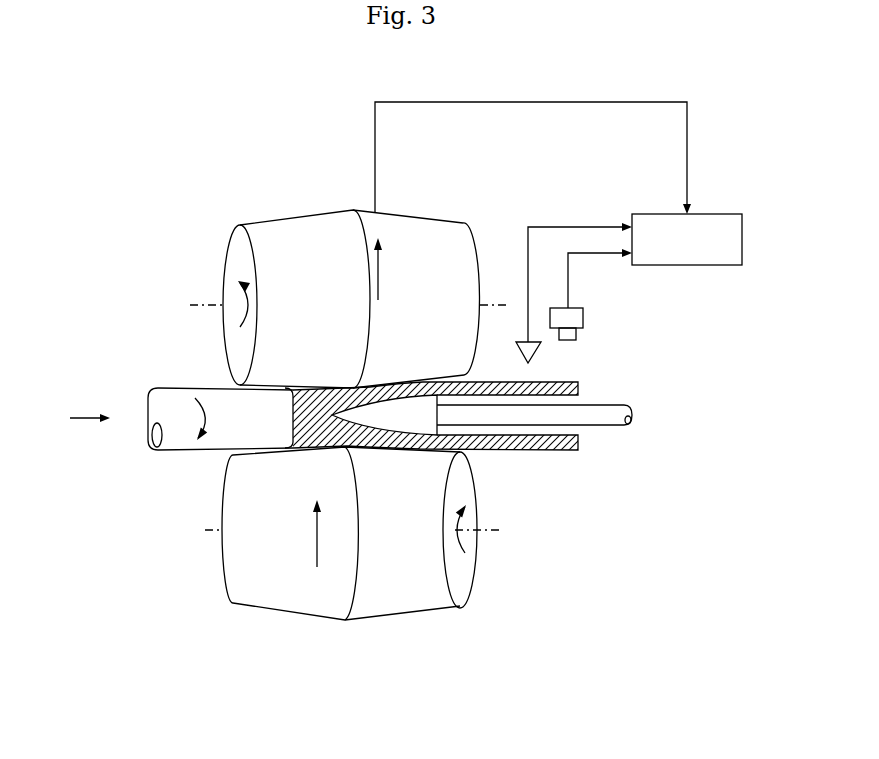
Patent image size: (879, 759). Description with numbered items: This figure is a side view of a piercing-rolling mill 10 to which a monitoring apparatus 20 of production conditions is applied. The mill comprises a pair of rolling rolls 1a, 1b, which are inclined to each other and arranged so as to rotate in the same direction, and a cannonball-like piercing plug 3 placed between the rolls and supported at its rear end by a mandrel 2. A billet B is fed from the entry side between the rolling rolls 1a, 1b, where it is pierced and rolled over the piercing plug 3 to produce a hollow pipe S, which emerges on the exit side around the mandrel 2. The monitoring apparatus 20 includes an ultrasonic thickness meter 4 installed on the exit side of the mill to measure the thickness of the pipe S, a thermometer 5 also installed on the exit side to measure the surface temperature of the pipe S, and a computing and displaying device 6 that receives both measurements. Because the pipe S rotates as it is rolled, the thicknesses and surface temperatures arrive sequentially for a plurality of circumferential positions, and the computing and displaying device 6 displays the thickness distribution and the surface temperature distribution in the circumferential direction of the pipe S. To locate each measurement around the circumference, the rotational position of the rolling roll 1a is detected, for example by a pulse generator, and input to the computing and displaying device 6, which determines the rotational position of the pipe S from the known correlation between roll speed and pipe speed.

The piercing-rolling mill 10 is at (162, 262).
The rolling roll 1a is at (417, 237).
The rolling roll 1b is at (413, 598).
The billet B is at (188, 428).
The pipe S is at (507, 450).
The piercing plug 3 is at (407, 410).
The mandrel 2 is at (603, 417).
The monitoring apparatus of production conditions 20 is at (572, 212).
The computing and displaying device 6 is at (687, 239).
The thermometer 5 is at (583, 318).
The ultrasonic thickness meter 4 is at (530, 356).